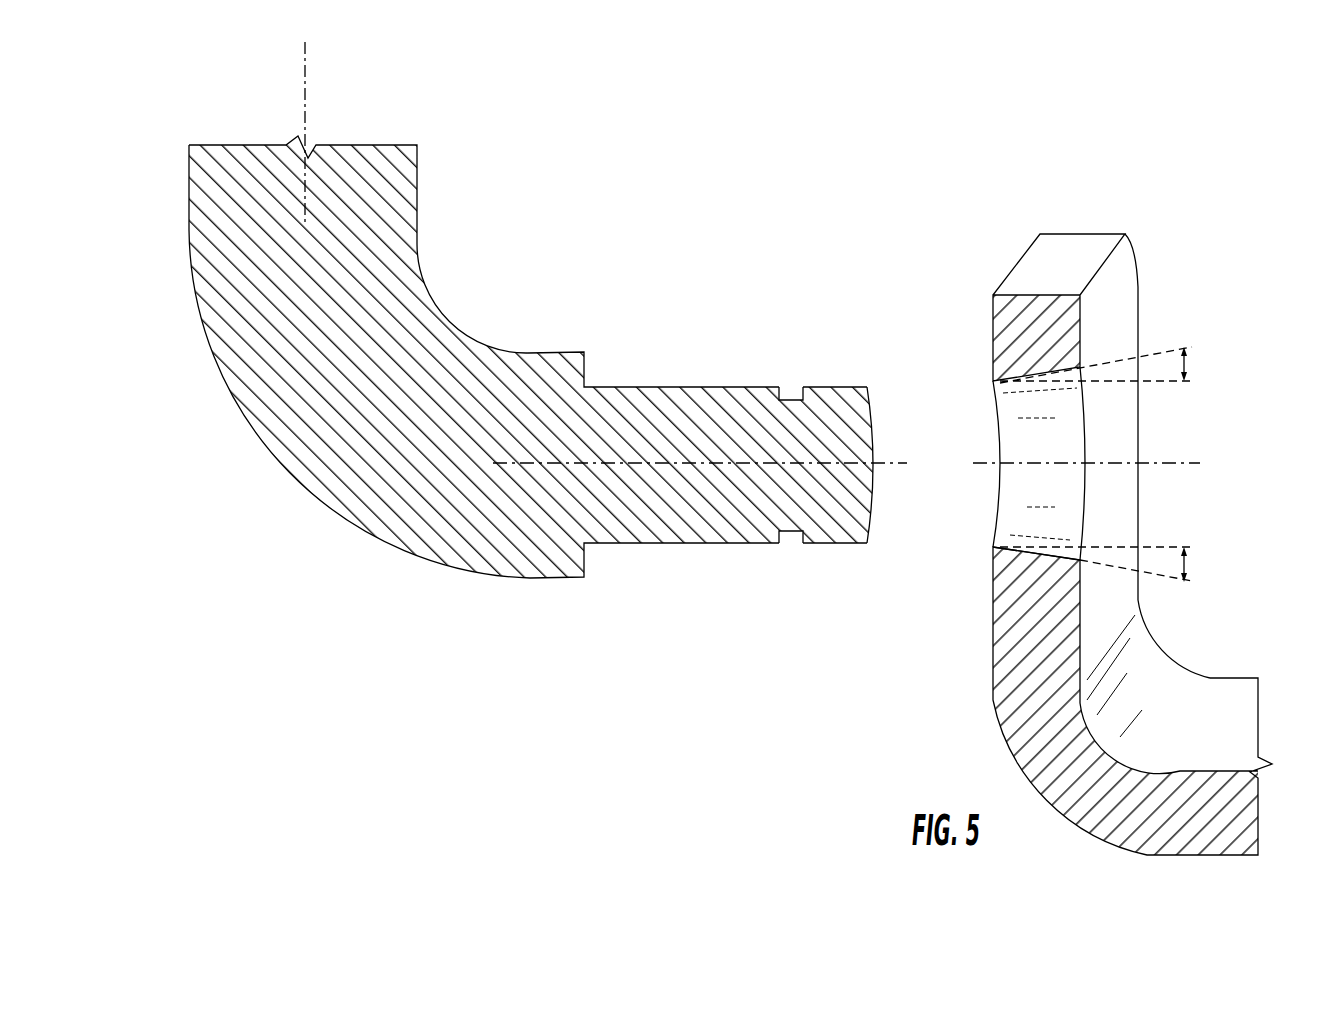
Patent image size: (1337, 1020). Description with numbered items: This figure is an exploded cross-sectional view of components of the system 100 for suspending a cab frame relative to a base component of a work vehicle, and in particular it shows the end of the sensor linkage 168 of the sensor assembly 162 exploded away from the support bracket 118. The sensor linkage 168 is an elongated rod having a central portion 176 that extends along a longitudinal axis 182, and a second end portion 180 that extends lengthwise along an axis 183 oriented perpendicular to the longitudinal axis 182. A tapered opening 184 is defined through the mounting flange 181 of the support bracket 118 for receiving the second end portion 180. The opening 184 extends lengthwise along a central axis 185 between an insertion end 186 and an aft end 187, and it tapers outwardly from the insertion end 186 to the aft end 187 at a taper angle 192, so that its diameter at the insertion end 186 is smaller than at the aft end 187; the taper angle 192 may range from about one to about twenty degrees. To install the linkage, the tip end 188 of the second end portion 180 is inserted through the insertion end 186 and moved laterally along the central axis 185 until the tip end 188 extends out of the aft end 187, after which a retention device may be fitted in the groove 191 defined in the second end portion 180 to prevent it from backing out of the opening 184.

The system 100 is at (900, 172).
The support bracket 118 is at (1240, 720).
The sensor assembly 162 is at (584, 183).
The sensor linkage 168 is at (434, 259).
The central portion 176 is at (400, 164).
The second end portion 180 is at (584, 338).
The mounting flange 181 is at (1120, 595).
The longitudinal axis 182 is at (306, 86).
The axis 183 is at (683, 462).
The tapered opening 184 is at (982, 418).
The central axis 185 is at (1178, 463).
The insertion end 186 is at (997, 521).
The aft end 187 is at (1087, 500).
The tip end 188 is at (875, 503).
The groove 191 is at (788, 544).
The taper angle 192 is at (1198, 365).